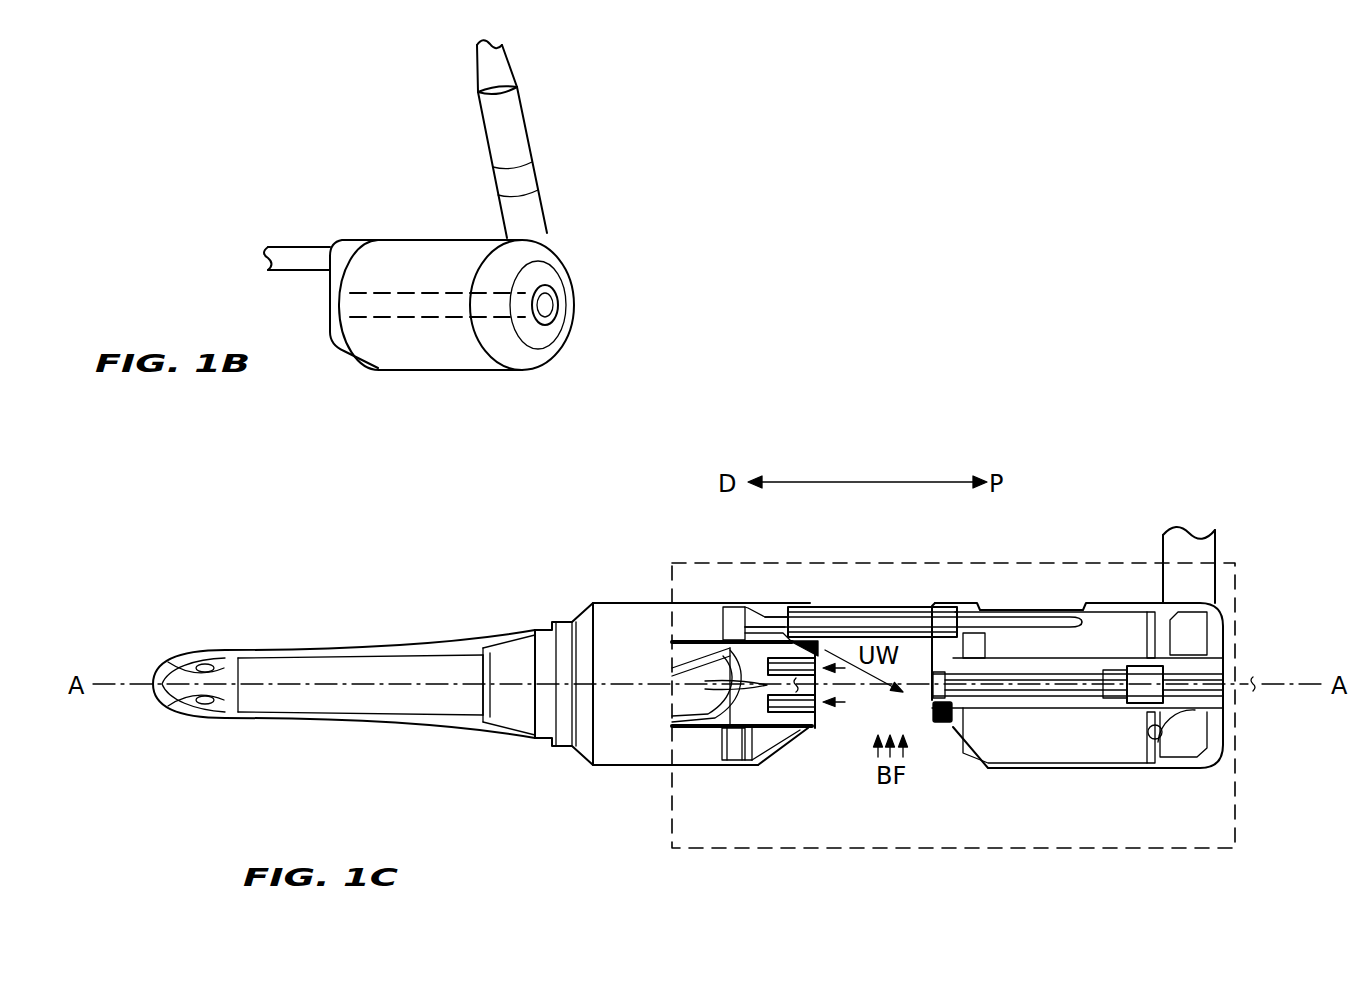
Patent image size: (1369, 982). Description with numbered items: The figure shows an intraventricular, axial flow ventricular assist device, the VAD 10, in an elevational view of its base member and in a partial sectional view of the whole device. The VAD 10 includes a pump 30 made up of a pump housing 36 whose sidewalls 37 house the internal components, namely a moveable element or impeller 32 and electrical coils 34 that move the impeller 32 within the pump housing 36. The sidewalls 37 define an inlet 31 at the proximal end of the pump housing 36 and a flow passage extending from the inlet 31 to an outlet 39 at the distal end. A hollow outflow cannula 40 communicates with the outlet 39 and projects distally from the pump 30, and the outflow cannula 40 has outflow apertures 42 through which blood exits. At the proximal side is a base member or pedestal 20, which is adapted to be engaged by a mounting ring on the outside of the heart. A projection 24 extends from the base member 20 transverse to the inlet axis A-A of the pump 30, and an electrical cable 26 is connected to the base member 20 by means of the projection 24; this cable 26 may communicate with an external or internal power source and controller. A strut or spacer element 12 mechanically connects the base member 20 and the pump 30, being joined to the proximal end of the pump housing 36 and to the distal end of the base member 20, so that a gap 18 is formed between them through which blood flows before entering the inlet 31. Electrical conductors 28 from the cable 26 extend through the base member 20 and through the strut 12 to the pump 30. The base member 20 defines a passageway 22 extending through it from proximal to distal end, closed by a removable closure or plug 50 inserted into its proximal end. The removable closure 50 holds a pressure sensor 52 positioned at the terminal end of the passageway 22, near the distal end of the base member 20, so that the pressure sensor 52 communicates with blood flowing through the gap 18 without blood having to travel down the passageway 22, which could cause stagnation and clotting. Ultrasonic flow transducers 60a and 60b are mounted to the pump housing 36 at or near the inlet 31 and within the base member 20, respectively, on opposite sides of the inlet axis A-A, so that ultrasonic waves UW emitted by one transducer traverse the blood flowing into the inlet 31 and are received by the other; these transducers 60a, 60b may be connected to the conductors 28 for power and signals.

In FIG. 1C, the VAD 10 is at (1110, 478).
In FIG. 1B, the strut 12 is at (288, 253).
In FIG. 1C, the strut 12 is at (884, 615).
In FIG. 1C, the gap 18 is at (892, 721).
In FIG. 1B, the base member 20 is at (406, 156).
In FIG. 1C, the base member 20 is at (1022, 585).
In FIG. 1B, the passageway 22 is at (548, 305).
In FIG. 1B, the projection 24 is at (518, 137).
In FIG. 1C, the projection 24 is at (1173, 543).
In FIG. 1B, the electrical cable 26 is at (493, 67).
In FIG. 1C, the electrical conductors 28 is at (917, 623).
In FIG. 1C, the pump 30 is at (619, 555).
In FIG. 1C, the inlet 31 is at (816, 706).
In FIG. 1C, the impeller 32 is at (733, 728).
In FIG. 1C, the electrical coils 34 is at (705, 618).
In FIG. 1C, the pump housing 36 is at (612, 767).
In FIG. 1C, the sidewalls 37 is at (793, 737).
In FIG. 1C, the outlet 39 is at (480, 698).
In FIG. 1C, the outflow cannula 40 is at (253, 603).
In FIG. 1C, the outflow apertures 42 is at (205, 700).
In FIG. 1C, the removable closure 50 is at (1107, 715).
In FIG. 1C, the pressure sensor 52 is at (962, 688).
In FIG. 1C, the ultrasonic flow transducer 60a is at (814, 641).
In FIG. 1C, the ultrasonic flow transducer 60b is at (941, 724).